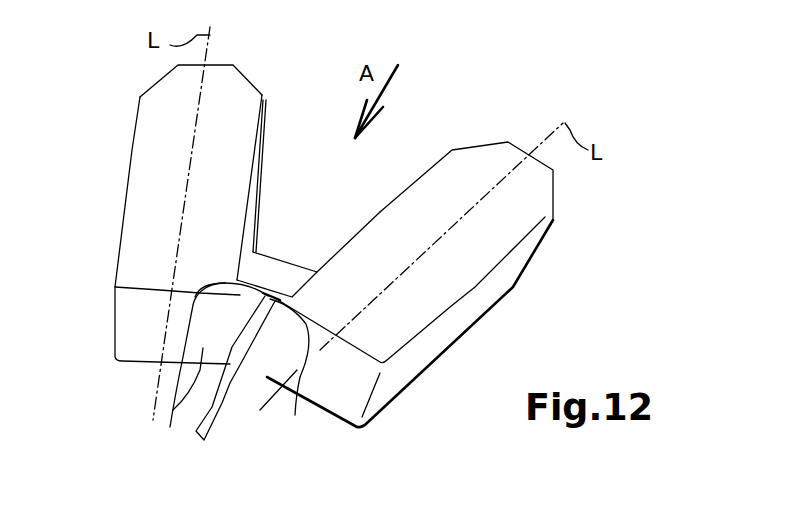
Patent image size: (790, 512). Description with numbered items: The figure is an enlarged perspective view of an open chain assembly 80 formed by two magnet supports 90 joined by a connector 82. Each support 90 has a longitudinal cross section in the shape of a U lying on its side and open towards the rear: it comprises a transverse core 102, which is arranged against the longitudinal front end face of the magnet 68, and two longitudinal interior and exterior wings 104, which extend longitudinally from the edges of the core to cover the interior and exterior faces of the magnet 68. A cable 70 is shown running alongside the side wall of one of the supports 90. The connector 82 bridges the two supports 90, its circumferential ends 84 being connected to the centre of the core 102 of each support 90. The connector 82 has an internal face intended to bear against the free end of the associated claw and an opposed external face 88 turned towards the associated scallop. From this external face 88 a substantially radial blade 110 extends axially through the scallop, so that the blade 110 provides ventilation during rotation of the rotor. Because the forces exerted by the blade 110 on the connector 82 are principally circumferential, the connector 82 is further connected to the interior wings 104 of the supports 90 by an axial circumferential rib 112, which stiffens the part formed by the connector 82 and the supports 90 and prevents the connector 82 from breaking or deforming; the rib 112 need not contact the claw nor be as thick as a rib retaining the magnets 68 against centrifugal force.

The connector assembly 80 is at (635, 117).
The support 90 is at (148, 200).
The wing 104 is at (225, 115).
The magnet 68 is at (263, 173).
The cable 70 is at (252, 240).
The axial circumferential rib 112 is at (290, 275).
The transverse core 102 is at (133, 318).
The circumferential end 84 is at (173, 370).
The external face 88 is at (191, 369).
The blade 110 is at (235, 397).
The connector 82 is at (265, 362).